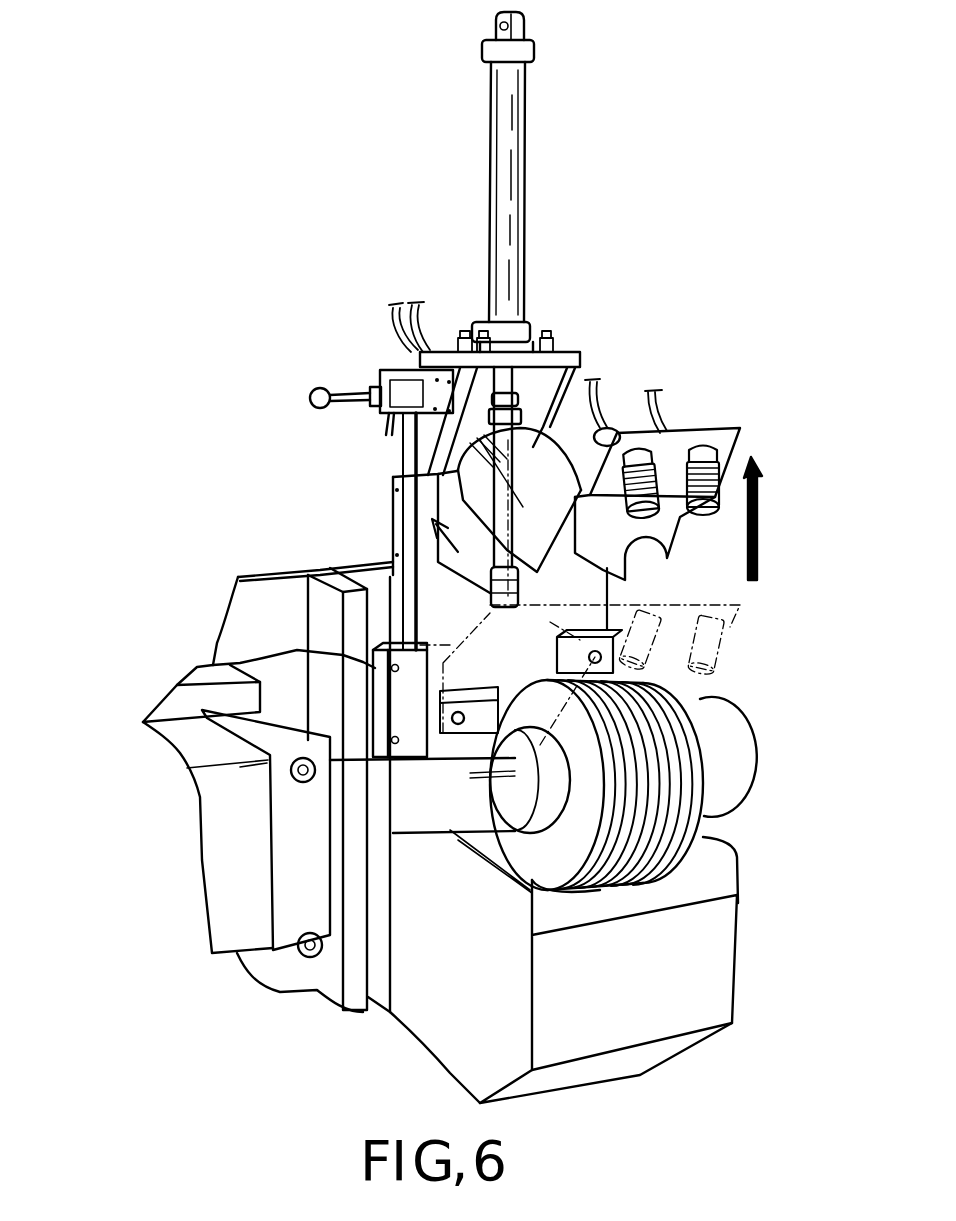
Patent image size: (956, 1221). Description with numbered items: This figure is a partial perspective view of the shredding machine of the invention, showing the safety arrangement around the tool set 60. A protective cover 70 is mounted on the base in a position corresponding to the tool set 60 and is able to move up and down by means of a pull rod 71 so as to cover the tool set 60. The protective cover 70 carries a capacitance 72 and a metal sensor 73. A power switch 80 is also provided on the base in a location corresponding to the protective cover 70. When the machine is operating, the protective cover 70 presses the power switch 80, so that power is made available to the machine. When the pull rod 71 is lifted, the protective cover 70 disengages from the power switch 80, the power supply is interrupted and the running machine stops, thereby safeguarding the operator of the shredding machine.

The tool set 60 is at (705, 762).
The protective cover 70 is at (450, 512).
The pull rod 71 is at (510, 174).
The capacitance 72 is at (720, 487).
The metal sensor 73 is at (670, 482).
The power switch 80 is at (213, 665).